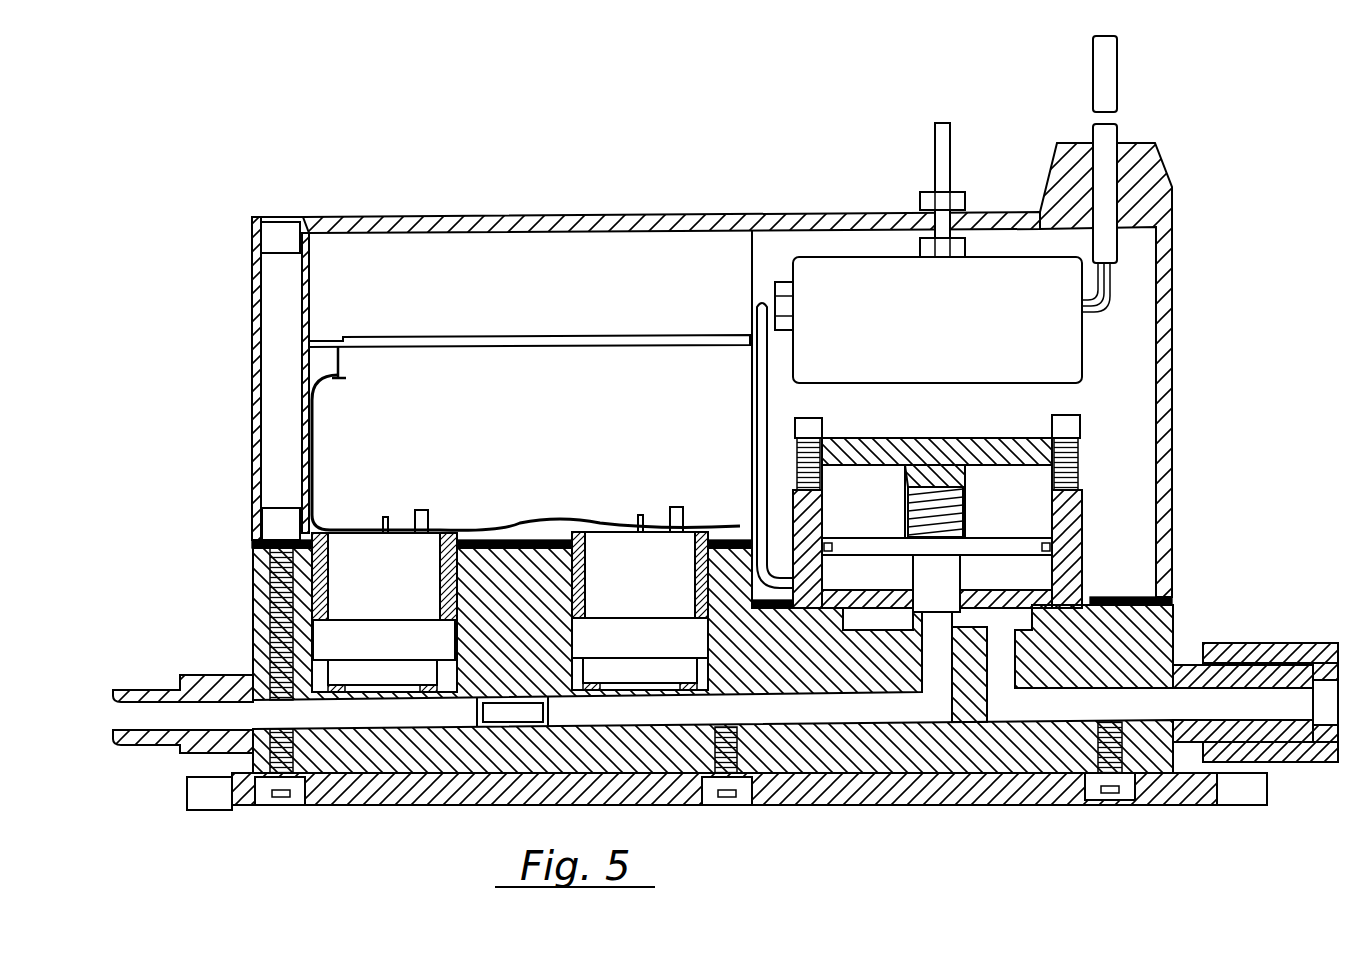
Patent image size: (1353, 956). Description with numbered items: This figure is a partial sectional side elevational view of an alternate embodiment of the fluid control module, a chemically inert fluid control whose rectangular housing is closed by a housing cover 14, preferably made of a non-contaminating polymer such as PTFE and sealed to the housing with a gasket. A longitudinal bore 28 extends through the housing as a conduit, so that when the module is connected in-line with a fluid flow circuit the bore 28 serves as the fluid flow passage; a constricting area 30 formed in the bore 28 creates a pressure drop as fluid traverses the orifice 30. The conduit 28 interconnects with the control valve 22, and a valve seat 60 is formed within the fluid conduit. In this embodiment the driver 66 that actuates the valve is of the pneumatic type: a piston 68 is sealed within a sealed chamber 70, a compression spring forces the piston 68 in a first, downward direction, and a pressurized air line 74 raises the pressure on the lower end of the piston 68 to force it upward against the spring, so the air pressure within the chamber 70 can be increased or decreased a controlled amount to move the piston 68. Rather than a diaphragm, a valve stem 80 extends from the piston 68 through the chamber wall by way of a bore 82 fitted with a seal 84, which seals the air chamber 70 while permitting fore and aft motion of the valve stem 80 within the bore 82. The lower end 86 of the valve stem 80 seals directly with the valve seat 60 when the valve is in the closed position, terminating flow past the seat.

The housing cover 14 is at (1172, 372).
The control valve 22 is at (936, 326).
The longitudinal bore 28 is at (790, 708).
The constricting area 30 is at (500, 712).
The valve seat 60 is at (955, 620).
The driver 66 is at (851, 293).
The piston 68 is at (985, 545).
The sealed chamber 70 is at (846, 572).
The pressurized air line 74 is at (760, 410).
The valve stem 80 is at (935, 605).
The chamber wall bore 82 is at (968, 603).
The seal 84 is at (918, 600).
The lower end of valve stem 86 is at (908, 603).